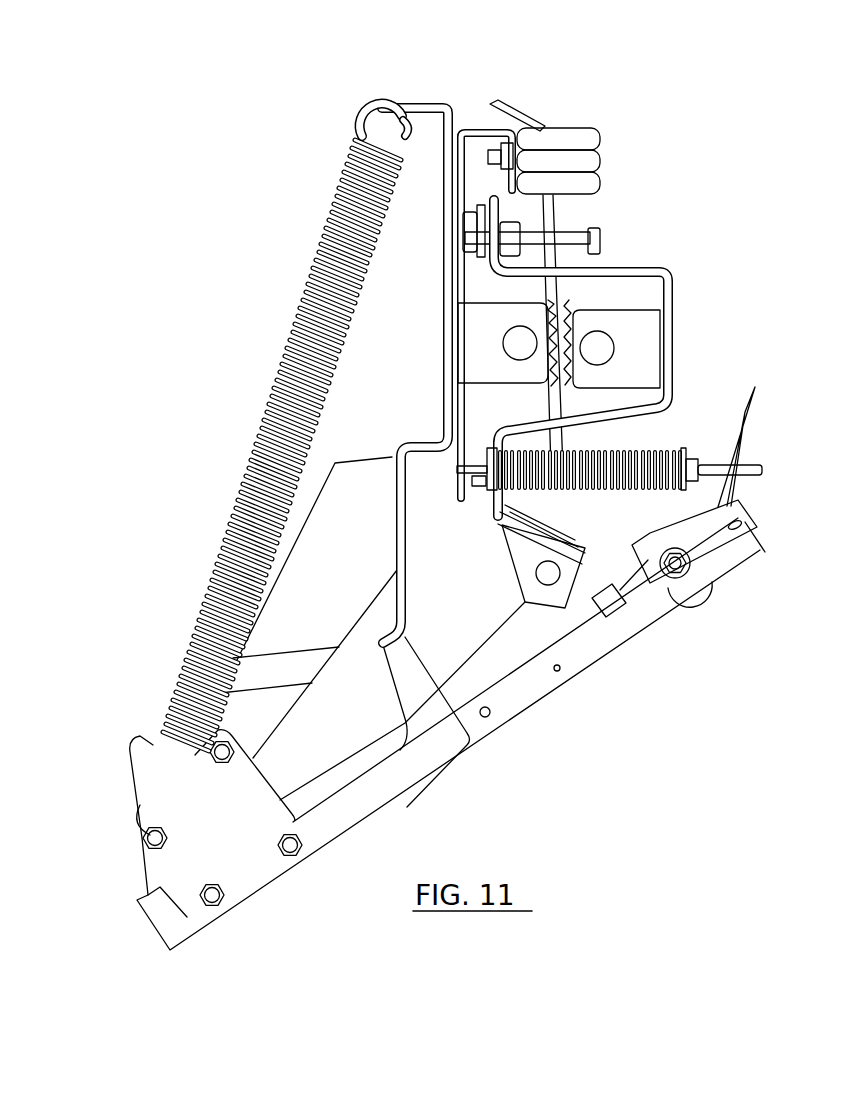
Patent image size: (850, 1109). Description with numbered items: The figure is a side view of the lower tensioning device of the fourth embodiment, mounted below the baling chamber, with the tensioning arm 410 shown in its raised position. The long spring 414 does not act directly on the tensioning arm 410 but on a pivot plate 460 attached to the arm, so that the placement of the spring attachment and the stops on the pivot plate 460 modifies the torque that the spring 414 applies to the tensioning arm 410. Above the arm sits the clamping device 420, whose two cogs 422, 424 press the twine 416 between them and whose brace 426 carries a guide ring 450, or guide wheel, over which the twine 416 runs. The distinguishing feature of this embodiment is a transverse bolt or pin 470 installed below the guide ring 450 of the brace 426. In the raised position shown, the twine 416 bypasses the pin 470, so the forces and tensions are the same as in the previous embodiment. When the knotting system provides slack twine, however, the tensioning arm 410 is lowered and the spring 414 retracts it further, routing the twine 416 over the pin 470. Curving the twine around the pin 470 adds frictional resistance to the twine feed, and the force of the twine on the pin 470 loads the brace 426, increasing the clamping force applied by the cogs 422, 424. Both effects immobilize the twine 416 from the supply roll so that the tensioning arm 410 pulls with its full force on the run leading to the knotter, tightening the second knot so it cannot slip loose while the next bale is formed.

The tensioning arm 410 is at (566, 661).
The spring 414 is at (255, 420).
The twine 416 is at (757, 406).
The clamping device 420 is at (684, 260).
The cog 422 is at (515, 303).
The cog 424 is at (590, 303).
The brace 426 is at (660, 372).
The guide ring 450 is at (502, 525).
The pivot plate 460 is at (378, 792).
The transverse bolt or pin 470 is at (532, 580).